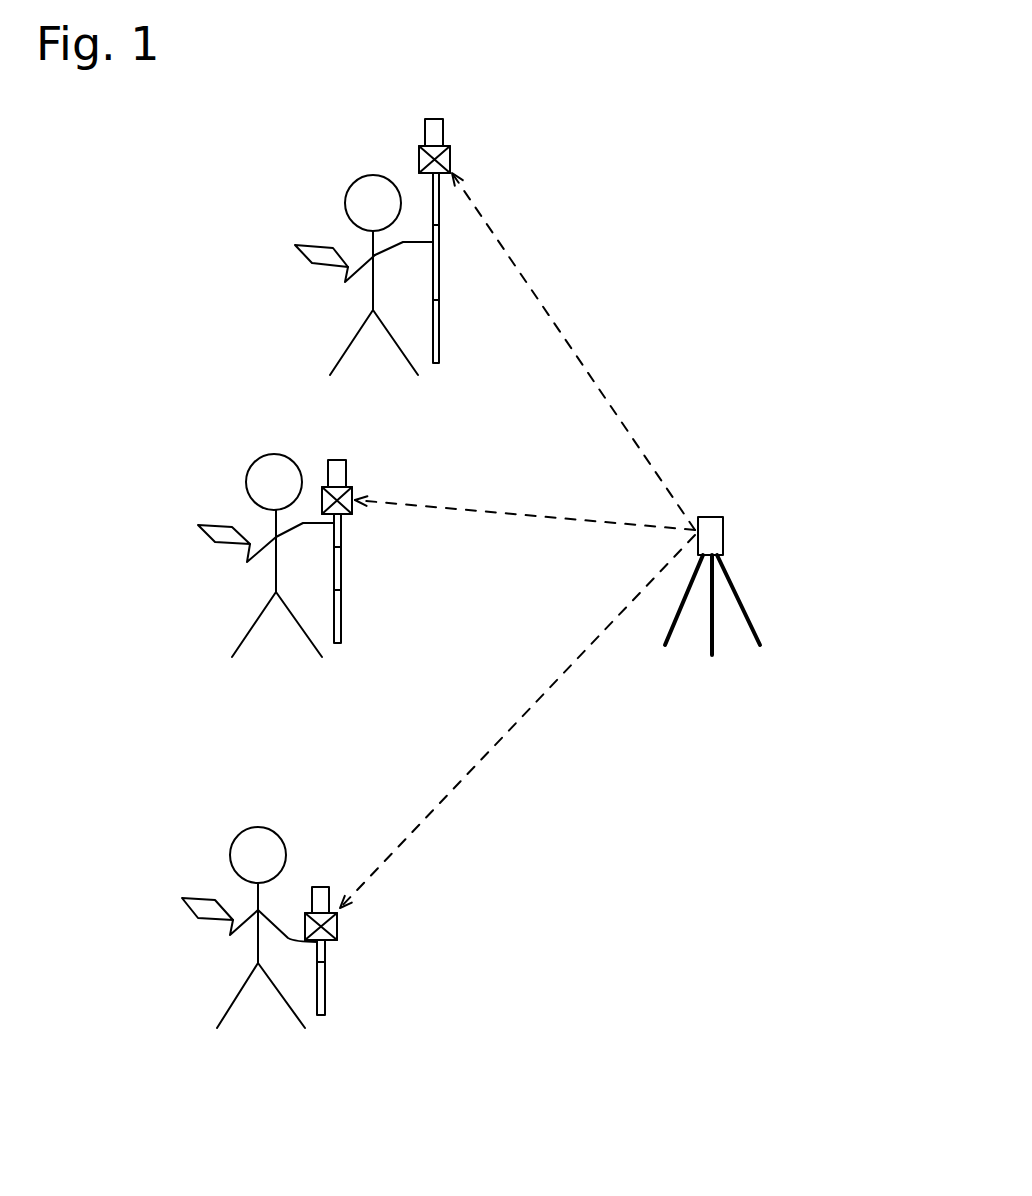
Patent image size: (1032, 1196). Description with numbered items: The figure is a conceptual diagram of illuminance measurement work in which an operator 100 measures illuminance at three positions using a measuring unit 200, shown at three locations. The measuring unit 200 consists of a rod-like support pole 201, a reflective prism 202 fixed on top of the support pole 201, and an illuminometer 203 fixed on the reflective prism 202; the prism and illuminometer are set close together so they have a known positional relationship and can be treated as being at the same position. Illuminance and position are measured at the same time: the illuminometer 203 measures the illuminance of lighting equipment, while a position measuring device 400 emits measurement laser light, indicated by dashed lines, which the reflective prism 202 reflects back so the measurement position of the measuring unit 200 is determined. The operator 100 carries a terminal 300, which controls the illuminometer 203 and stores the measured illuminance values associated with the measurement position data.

The operator 100 is at (242, 595).
The measuring unit 200 is at (398, 535).
The support pole 201 is at (343, 557).
The reflective prism 202 is at (350, 488).
The illuminometer 203 is at (347, 467).
The terminal 300 is at (195, 522).
The position measuring device 400 is at (735, 522).